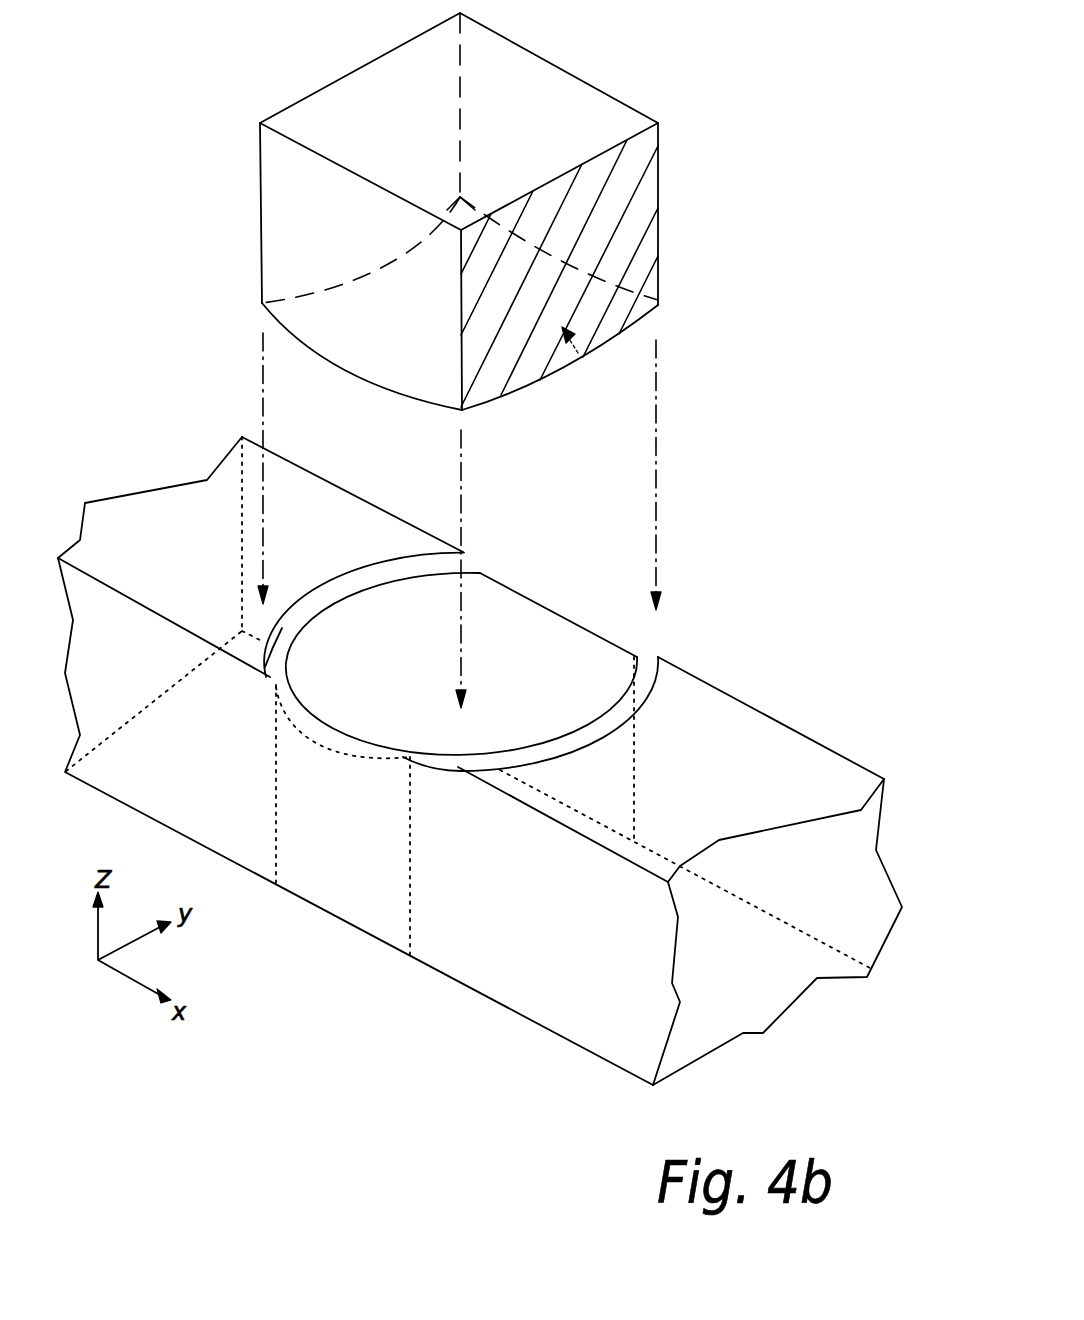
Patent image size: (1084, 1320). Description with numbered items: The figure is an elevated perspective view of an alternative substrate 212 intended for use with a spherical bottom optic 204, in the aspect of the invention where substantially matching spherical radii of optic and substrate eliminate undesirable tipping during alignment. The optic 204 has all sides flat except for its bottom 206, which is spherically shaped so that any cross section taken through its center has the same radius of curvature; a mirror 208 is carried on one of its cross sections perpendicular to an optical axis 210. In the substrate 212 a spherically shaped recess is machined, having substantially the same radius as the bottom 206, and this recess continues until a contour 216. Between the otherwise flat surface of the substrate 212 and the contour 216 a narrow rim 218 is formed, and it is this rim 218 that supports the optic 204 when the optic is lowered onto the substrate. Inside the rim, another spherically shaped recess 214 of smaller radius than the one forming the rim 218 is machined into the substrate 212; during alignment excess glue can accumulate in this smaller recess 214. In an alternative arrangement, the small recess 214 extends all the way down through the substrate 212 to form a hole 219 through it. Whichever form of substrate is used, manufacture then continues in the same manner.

The optic 204 is at (660, 247).
The bottom 206 is at (583, 362).
The mirror 208 is at (597, 170).
The optical axis 210 is at (727, 659).
The substrate 212 is at (553, 900).
The recess 214 is at (543, 662).
The contour 216 is at (480, 573).
The rim 218 is at (270, 667).
The hole 219 is at (276, 800).